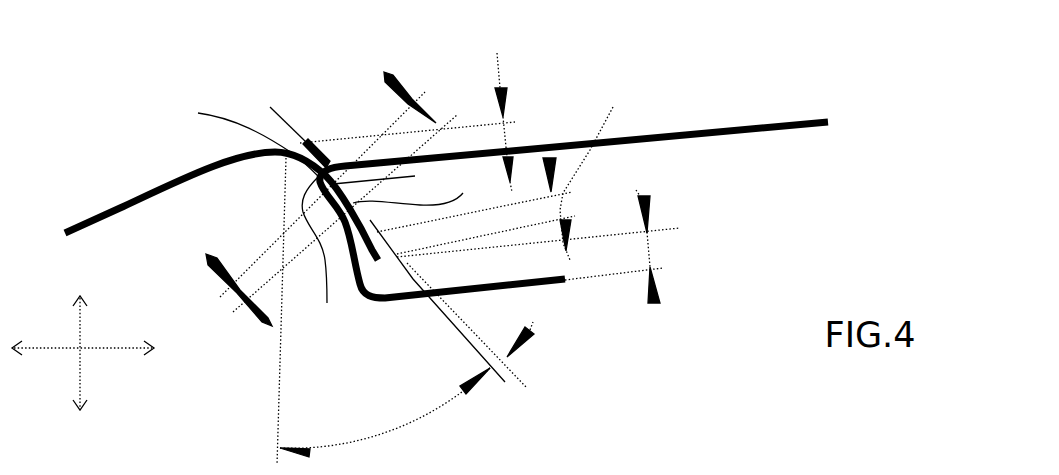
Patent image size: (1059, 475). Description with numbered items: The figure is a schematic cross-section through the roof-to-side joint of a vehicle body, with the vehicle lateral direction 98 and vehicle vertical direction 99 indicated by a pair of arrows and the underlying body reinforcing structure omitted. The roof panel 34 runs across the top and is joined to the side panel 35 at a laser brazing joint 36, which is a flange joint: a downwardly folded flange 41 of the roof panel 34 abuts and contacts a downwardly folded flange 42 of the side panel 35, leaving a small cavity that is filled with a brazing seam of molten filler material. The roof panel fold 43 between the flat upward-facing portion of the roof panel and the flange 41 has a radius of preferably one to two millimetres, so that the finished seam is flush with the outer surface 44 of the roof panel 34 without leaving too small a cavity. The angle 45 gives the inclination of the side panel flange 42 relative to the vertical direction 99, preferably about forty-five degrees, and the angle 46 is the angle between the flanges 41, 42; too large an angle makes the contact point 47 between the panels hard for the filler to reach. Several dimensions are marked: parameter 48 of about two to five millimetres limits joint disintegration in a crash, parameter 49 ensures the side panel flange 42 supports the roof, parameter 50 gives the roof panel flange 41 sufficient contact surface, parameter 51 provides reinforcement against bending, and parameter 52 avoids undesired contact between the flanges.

The roof panel 34 is at (717, 129).
The side panel 35 is at (165, 187).
The laser brazing joint 36 is at (235, 134).
The downwardly folded flange of the roof panel 41 is at (516, 228).
The downwardly folded flange of the side panel 42 is at (323, 262).
The roof panel fold 43 is at (270, 107).
The outer surface of the roof panel 44 is at (781, 122).
The angle of the side panel flange to vertical 45 is at (393, 430).
The angle between the flanges 46 is at (527, 388).
The contact point 47 is at (395, 180).
The parameter 48 (joint dimension) 48 is at (497, 53).
The parameter 49 (side panel flange dimension) 49 is at (301, 278).
The parameter 50 (roof panel flange dimension) 50 is at (384, 71).
The parameter 51 (reinforcement dimension) 51 is at (613, 107).
The parameter 52 (flange clearance) 52 is at (668, 236).
The vehicle lateral direction 98 is at (88, 364).
The vehicle vertical direction 99 is at (99, 341).